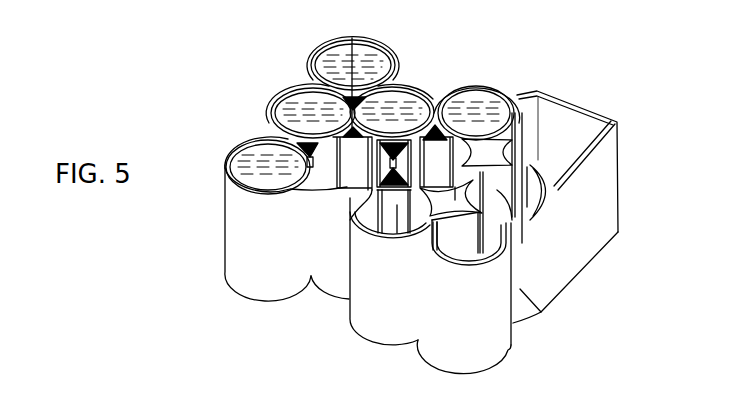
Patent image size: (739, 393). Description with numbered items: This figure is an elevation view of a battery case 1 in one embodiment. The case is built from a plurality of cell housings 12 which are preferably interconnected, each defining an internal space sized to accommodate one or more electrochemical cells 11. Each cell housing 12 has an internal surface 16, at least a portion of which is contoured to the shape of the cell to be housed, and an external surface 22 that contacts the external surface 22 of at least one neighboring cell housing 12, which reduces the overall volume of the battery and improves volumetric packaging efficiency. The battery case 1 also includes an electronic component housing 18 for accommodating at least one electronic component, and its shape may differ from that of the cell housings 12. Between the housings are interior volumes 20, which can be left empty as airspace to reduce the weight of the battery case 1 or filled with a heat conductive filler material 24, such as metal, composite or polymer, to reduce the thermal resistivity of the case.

The battery case 1 is at (535, 50).
The cells 11 is at (307, 105).
The cell housing 12 is at (395, 150).
The internal surface 16 is at (457, 230).
The electronic component housing 18 is at (583, 118).
The interior volumes 20 is at (455, 200).
The external surface 22 is at (480, 328).
The heat conductive filler material 24 is at (357, 129).